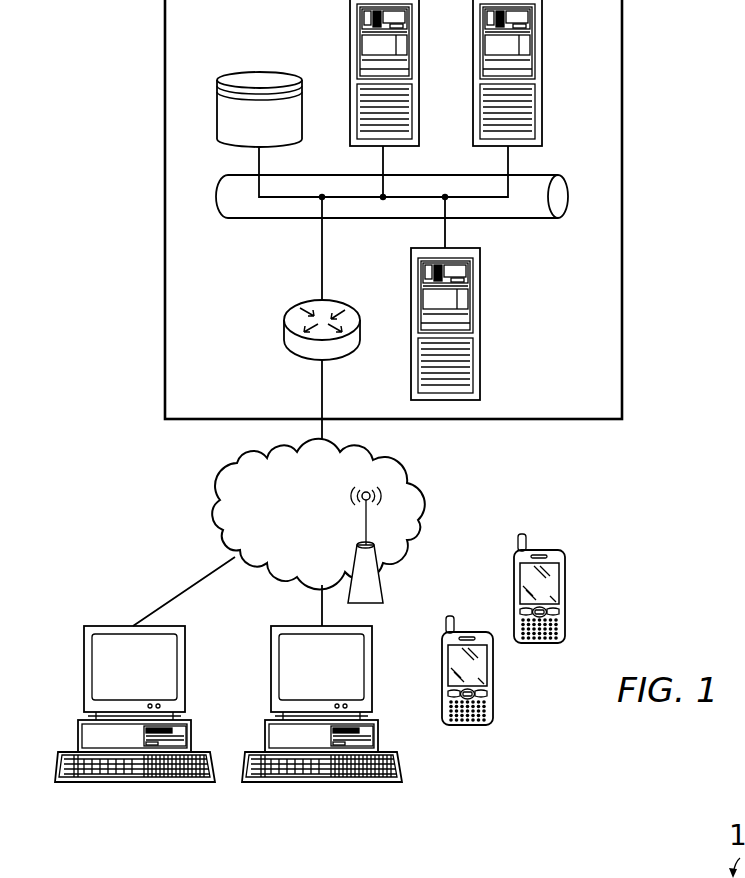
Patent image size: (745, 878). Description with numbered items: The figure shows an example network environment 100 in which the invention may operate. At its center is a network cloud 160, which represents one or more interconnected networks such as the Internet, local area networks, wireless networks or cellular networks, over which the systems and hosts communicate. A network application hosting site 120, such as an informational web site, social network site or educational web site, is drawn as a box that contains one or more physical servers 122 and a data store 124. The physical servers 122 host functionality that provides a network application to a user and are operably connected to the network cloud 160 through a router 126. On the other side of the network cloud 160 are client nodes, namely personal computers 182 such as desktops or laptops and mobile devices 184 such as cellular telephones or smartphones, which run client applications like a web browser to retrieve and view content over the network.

The system 100 is at (96, 44).
The network application hosting site 120 is at (158, 153).
The physical servers 122 is at (348, 47).
The data store 124 is at (254, 72).
The router 126 is at (283, 332).
The network cloud 160 is at (218, 512).
The personal computer 182 is at (84, 668).
The mobile devices 184 is at (567, 589).